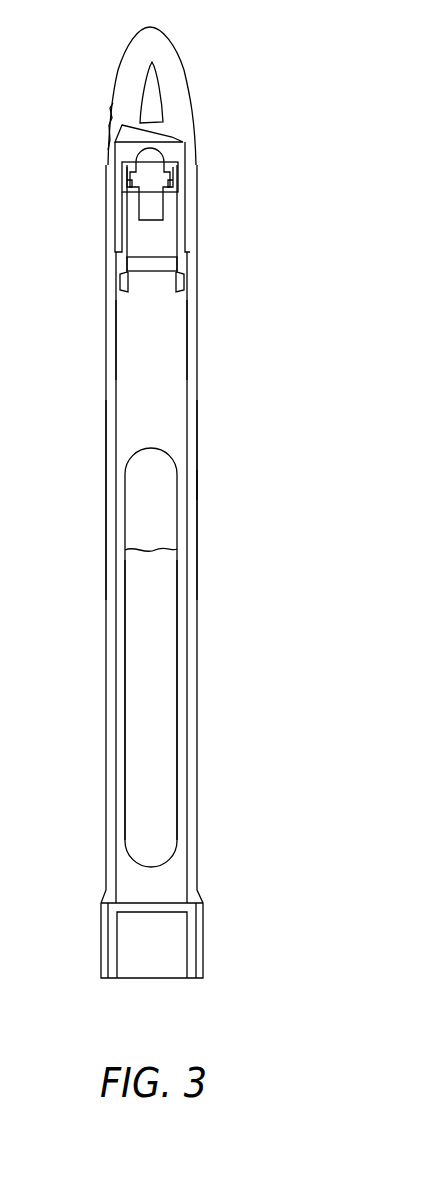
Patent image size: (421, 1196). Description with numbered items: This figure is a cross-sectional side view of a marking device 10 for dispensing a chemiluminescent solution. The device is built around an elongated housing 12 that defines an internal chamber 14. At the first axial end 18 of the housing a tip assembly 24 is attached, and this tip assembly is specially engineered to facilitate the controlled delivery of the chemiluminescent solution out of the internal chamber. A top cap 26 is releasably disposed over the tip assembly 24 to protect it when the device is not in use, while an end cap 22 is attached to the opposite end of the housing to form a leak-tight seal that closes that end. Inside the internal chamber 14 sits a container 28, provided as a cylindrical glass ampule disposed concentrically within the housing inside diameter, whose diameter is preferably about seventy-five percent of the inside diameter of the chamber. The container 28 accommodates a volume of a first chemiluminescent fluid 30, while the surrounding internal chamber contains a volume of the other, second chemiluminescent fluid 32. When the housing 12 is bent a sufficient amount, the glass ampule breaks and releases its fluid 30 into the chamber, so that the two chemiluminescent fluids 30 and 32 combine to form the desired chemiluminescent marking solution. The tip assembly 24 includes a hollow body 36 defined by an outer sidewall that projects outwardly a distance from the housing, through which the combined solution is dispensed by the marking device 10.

The marking device 10 is at (225, 487).
The housing 12 is at (203, 597).
The internal chamber 14 is at (190, 397).
The first axial end 18 is at (192, 252).
The end cap 22 is at (188, 975).
The tip assembly 24 is at (170, 200).
The top cap 26 is at (174, 88).
The container 28 is at (173, 523).
The chemiluminescent fluid 30 is at (167, 655).
The chemiluminescent fluid 32 is at (173, 362).
The hollow body 36 is at (120, 223).